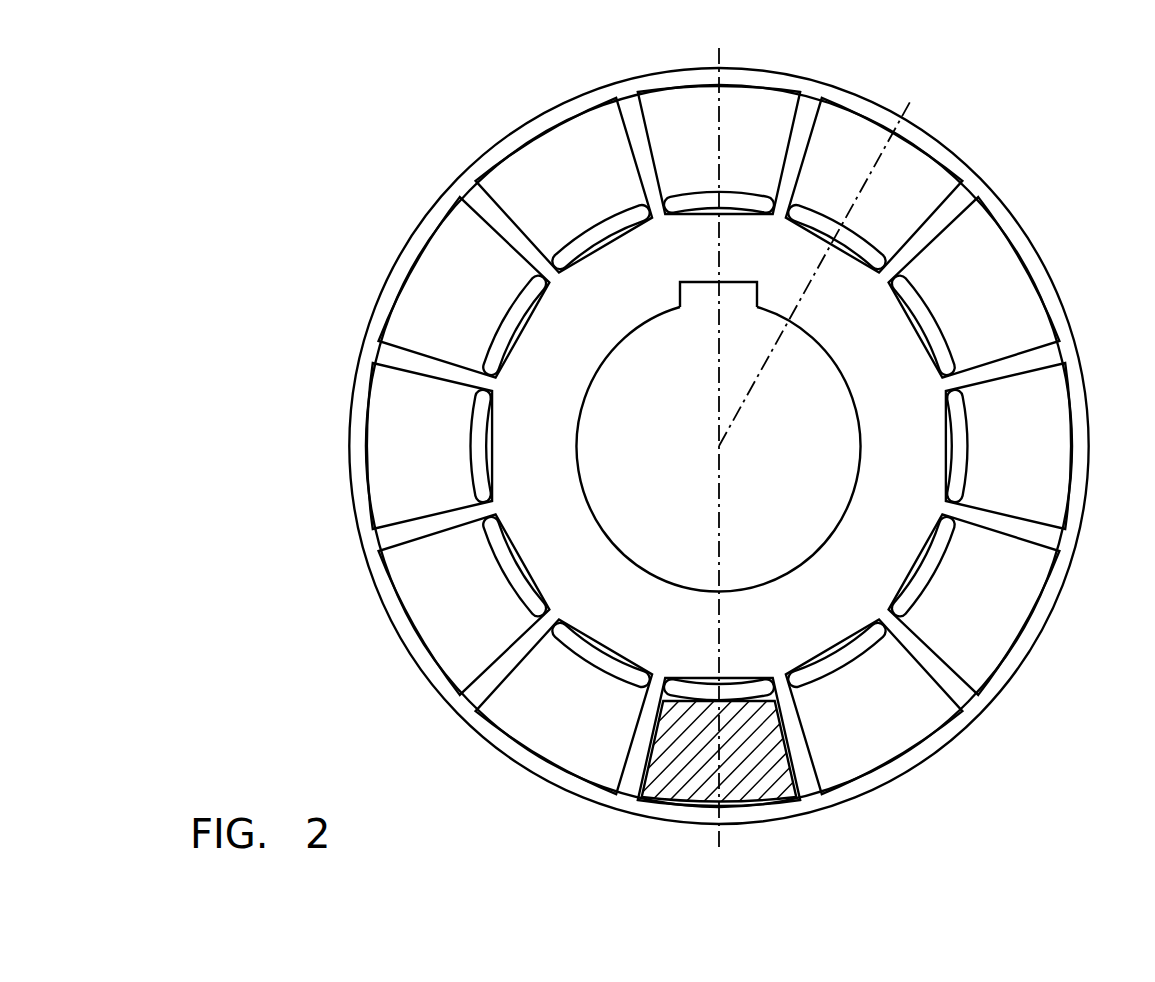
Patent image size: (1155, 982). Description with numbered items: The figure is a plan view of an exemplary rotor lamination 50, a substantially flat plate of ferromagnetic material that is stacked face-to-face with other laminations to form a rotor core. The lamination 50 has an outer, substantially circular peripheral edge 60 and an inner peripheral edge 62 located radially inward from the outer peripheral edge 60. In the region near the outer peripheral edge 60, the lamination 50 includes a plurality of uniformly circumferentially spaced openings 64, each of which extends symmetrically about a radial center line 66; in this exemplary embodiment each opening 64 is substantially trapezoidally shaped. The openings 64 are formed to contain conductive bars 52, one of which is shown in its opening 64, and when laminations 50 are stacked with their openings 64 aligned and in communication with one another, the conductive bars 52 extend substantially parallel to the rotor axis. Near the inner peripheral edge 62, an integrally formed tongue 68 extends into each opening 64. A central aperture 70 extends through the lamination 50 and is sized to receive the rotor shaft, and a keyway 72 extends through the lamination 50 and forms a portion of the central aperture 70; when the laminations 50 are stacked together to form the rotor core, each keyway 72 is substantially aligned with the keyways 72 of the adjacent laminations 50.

The rotor lamination 50 is at (1032, 120).
The conductive bar 52 is at (728, 769).
The outer peripheral edge 60 is at (1037, 250).
The inner peripheral edge 62 is at (500, 467).
The opening 64 is at (768, 97).
The radial center line 66 is at (714, 270).
The tongue 68 is at (743, 205).
The central aperture 70 is at (681, 462).
The keyway 72 is at (695, 284).